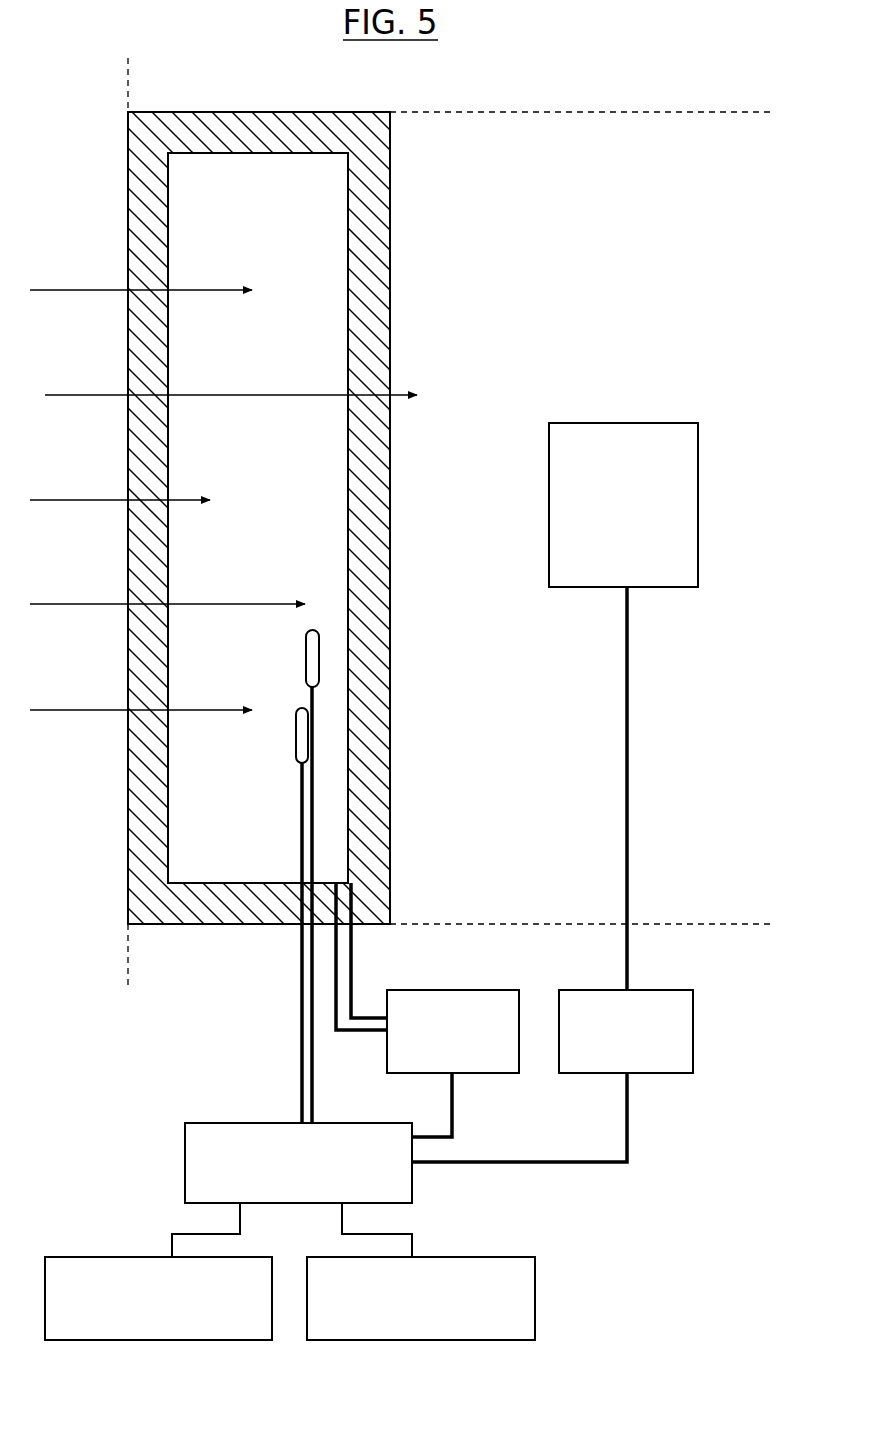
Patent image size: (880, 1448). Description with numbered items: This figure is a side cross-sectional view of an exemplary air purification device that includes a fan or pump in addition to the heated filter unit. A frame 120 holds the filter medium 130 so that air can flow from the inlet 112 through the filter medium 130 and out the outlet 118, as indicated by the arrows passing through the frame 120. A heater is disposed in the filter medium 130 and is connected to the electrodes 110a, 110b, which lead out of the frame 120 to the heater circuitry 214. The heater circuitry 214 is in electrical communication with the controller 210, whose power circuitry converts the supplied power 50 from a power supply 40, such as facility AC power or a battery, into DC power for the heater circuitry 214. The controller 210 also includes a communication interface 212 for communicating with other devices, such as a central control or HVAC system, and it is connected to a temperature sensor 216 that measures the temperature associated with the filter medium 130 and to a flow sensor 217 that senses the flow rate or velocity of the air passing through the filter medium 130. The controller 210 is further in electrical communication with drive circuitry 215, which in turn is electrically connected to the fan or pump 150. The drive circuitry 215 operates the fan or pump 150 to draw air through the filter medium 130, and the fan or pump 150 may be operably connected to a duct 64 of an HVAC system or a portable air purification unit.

The inlet 112 is at (128, 206).
The frame 120 is at (152, 262).
The duct 64 is at (628, 289).
The fan or pump 150 is at (670, 423).
The outlet 118 is at (391, 540).
The filter medium 130 is at (279, 596).
The temperature sensor 216 is at (319, 665).
The flow sensor 217 is at (302, 728).
The electrode 110a is at (354, 937).
The electrode 110b is at (340, 964).
The heater circuitry 214 is at (478, 990).
The drive circuitry 215 is at (670, 990).
The controller 210 is at (413, 1183).
The supplied power 50 is at (413, 1247).
The communication interface 212 is at (70, 1340).
The power supply 40 is at (515, 1340).